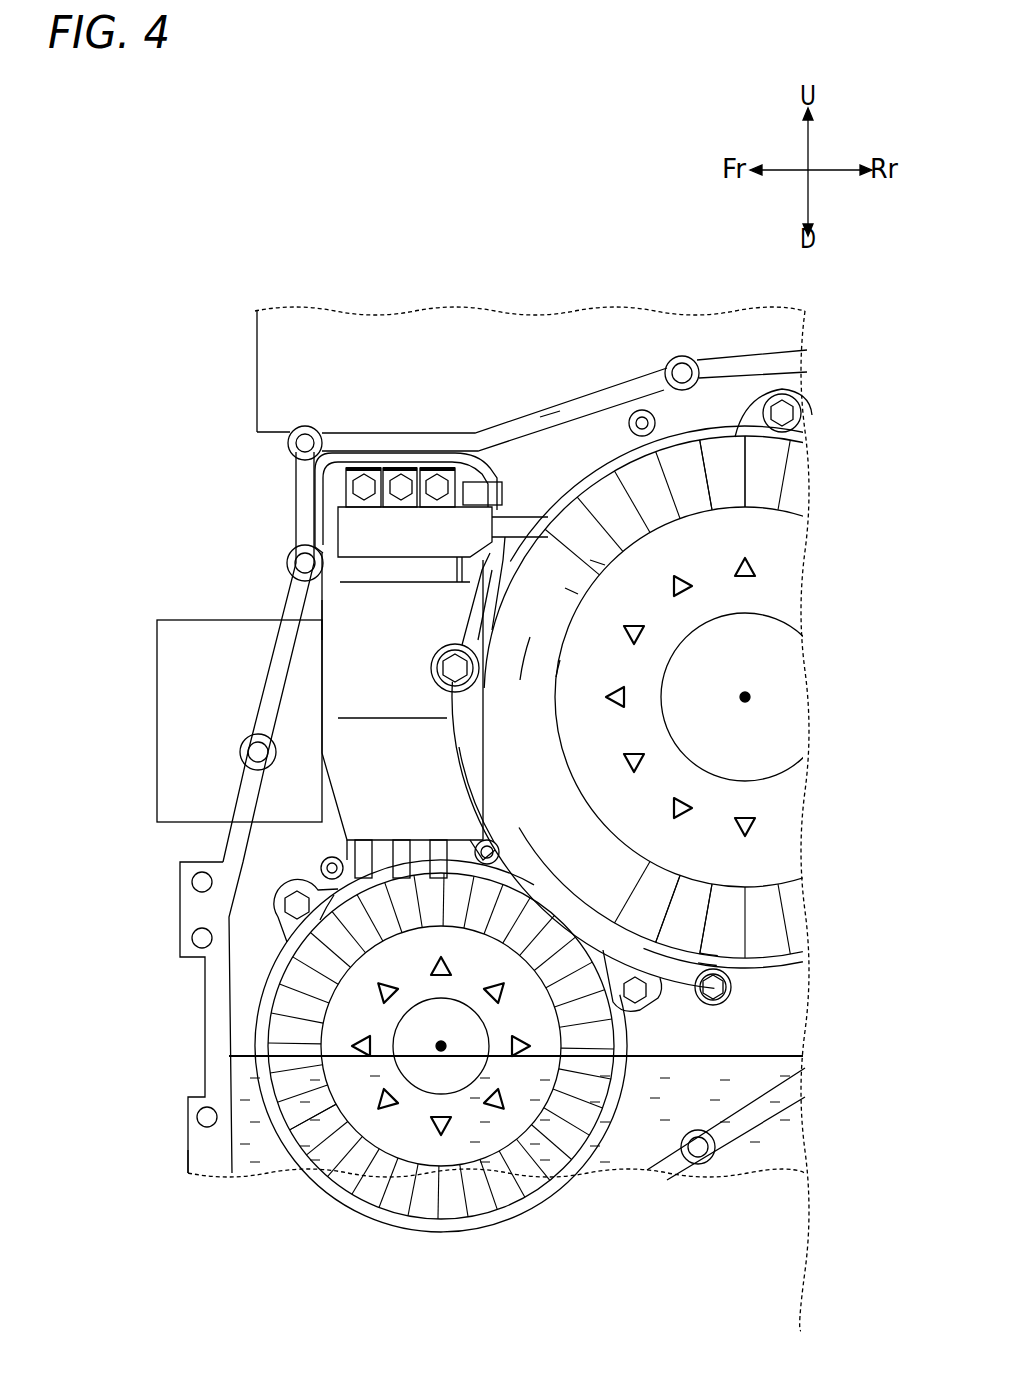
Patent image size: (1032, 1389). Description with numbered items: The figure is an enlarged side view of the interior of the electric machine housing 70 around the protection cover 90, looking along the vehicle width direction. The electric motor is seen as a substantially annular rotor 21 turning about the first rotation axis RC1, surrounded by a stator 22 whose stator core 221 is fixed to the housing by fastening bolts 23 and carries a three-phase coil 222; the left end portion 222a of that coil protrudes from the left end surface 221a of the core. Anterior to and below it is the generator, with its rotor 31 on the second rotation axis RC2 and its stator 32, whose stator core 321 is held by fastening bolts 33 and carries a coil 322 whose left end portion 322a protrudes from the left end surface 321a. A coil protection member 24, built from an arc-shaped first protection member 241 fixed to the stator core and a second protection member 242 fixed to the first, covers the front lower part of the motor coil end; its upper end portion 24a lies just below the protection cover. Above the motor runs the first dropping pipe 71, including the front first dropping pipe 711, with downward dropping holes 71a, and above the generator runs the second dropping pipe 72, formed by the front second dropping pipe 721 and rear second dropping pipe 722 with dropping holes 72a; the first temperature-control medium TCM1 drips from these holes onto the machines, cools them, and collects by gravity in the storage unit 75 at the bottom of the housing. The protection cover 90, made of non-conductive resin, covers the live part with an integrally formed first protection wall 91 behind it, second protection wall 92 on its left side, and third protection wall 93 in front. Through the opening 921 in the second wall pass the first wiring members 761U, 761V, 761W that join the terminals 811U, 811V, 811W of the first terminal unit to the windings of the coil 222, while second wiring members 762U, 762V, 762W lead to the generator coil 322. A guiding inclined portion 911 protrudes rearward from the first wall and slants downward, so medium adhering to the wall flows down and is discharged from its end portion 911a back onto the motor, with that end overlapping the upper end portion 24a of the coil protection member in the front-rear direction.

The rotor 21 is at (765, 545).
The stator 22 is at (777, 974).
The left end surface 221a is at (800, 400).
The stator core 221 is at (799, 675).
The left end portion 222a is at (765, 473).
The coil 222 is at (822, 480).
The fastening bolts 23 is at (800, 420).
The coil protection member 24 is at (556, 672).
The upper end portion 24a is at (545, 612).
The first protection member 241 is at (607, 930).
The second protection member 242 is at (677, 910).
The first rotation axis RC1 is at (750, 697).
The rotor 31 is at (400, 1125).
The stator 32 is at (255, 1021).
The left end surface 321a is at (335, 1105).
The stator core 321 is at (299, 1190).
The left end portion 322a is at (545, 1110).
The coil 322 is at (454, 1086).
The fastening bolts 33 is at (727, 1003).
The second rotation axis RC2 is at (443, 1052).
The electric machine housing 70 is at (300, 720).
The first dropping pipe 71 is at (547, 348).
The front first dropping pipe 711 is at (600, 412).
The dropping holes 71a is at (636, 412).
The second dropping pipe 72 is at (401, 847).
The front second dropping pipe 721 is at (325, 862).
The rear second dropping pipe 722 is at (540, 805).
The dropping holes 72a is at (513, 853).
The storage unit 75 is at (232, 1128).
The first wiring member for the U phase 761U is at (455, 600).
The first wiring member for the V phase 761V is at (485, 605).
The first wiring member for the W phase 761W is at (498, 583).
The second wiring member for the U phase 762U is at (362, 838).
The second wiring member for the V phase 762V is at (402, 838).
The second wiring member for the W phase 762W is at (440, 838).
The terminal for the U phase 811U is at (362, 470).
The terminal for the V phase 811V is at (402, 470).
The terminal for the W phase 811W is at (440, 470).
The protection cover 90 is at (326, 612).
The first protection wall 91 is at (528, 508).
The guiding inclined portion 911 is at (600, 563).
The end portion 911a is at (575, 592).
The second protection wall 92 is at (370, 658).
The third protection wall 93 is at (303, 600).
The opening 921 is at (373, 467).
The first temperature-control medium TCM1 is at (662, 1125).